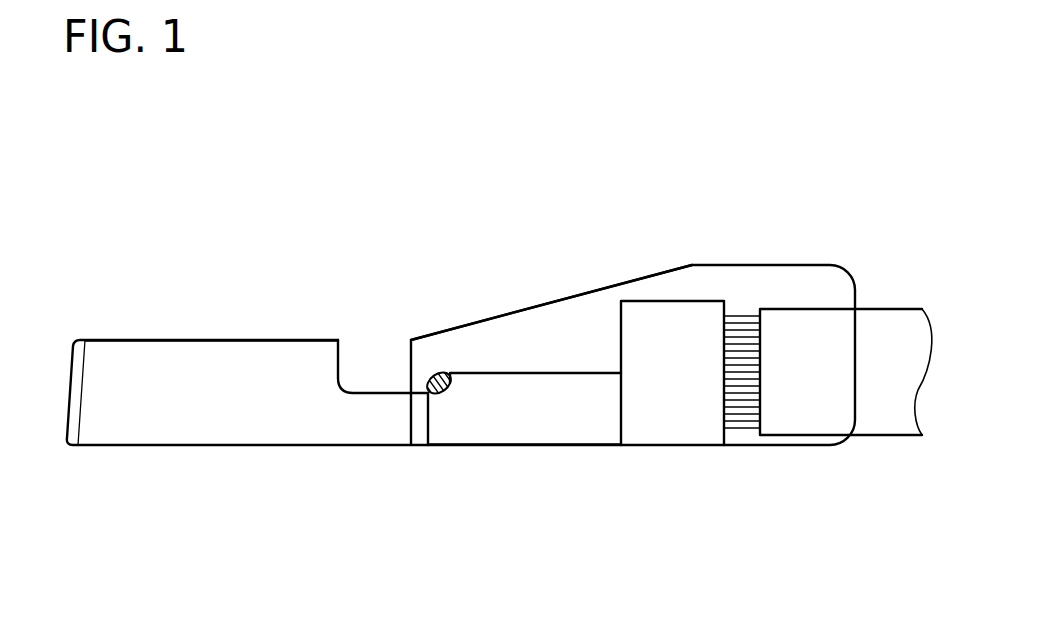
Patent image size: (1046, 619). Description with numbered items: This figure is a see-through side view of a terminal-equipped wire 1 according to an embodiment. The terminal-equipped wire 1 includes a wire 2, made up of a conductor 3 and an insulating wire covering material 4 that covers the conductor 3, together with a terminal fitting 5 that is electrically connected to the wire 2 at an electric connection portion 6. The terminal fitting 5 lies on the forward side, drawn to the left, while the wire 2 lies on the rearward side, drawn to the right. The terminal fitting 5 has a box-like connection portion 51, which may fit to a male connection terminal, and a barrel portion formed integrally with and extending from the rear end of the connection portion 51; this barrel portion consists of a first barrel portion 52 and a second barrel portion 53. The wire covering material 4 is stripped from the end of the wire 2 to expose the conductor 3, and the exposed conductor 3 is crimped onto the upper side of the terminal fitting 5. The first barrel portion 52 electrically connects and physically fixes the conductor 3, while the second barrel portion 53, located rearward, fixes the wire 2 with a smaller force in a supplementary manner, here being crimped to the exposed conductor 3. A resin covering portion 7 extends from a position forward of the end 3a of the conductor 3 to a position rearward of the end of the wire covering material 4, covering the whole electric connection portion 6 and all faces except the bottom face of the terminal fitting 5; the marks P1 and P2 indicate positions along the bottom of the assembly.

The terminal-equipped wire 1 is at (782, 155).
The wire 2 is at (873, 290).
The conductor 3 is at (740, 417).
The end of the conductor 3a is at (433, 377).
The wire covering material 4 is at (877, 413).
The terminal fitting 5 is at (250, 330).
The electric connection portion 6 is at (500, 368).
The resin covering portion 7 is at (628, 280).
The connection portion 51 is at (205, 415).
The first barrel portion 52 is at (538, 415).
The second barrel portion 53 is at (657, 408).
The first position P1 is at (860, 460).
The second position P2 is at (794, 460).